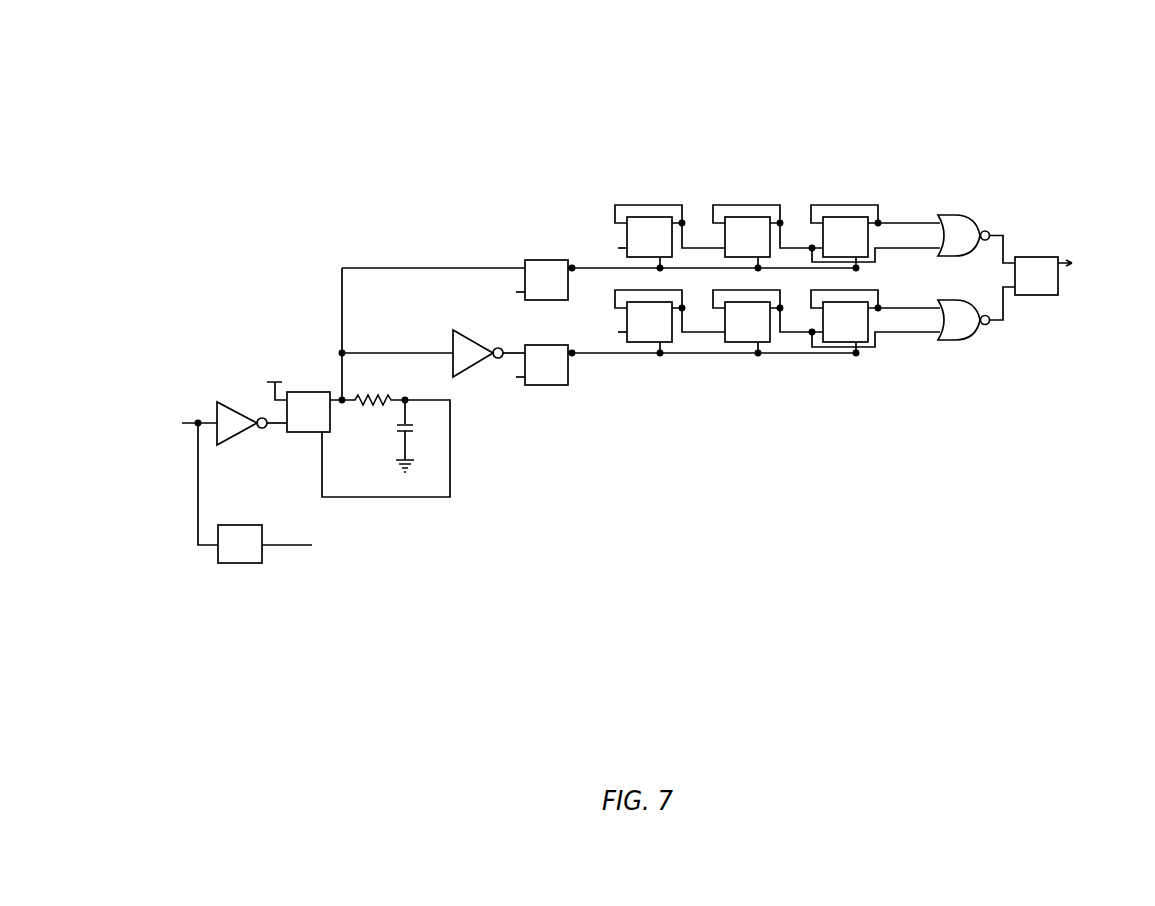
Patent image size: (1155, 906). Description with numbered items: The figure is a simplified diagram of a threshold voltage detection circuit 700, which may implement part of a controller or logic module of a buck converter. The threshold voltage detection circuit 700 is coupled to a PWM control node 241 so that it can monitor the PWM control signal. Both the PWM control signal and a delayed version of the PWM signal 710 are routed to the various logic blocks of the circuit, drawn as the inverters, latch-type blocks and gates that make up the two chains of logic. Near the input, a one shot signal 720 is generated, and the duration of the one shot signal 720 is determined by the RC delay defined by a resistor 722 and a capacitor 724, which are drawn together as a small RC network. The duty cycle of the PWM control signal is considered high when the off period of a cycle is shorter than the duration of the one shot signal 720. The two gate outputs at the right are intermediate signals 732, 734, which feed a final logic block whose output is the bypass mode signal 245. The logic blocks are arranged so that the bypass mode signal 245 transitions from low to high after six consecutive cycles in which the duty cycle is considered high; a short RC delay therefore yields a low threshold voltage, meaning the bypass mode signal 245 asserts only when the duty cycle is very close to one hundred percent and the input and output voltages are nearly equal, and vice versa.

The threshold voltage detection circuit 700 is at (211, 106).
The PWM control node 241 is at (182, 408).
The delayed version of the PWM signal 710 is at (293, 515).
The one shot signal 720 is at (400, 252).
The resistor 722 is at (375, 377).
The capacitor 724 is at (435, 437).
The intermediate signal 732 is at (1012, 222).
The intermediate signal 734 is at (1008, 343).
The bypass mode signal 245 is at (1077, 257).